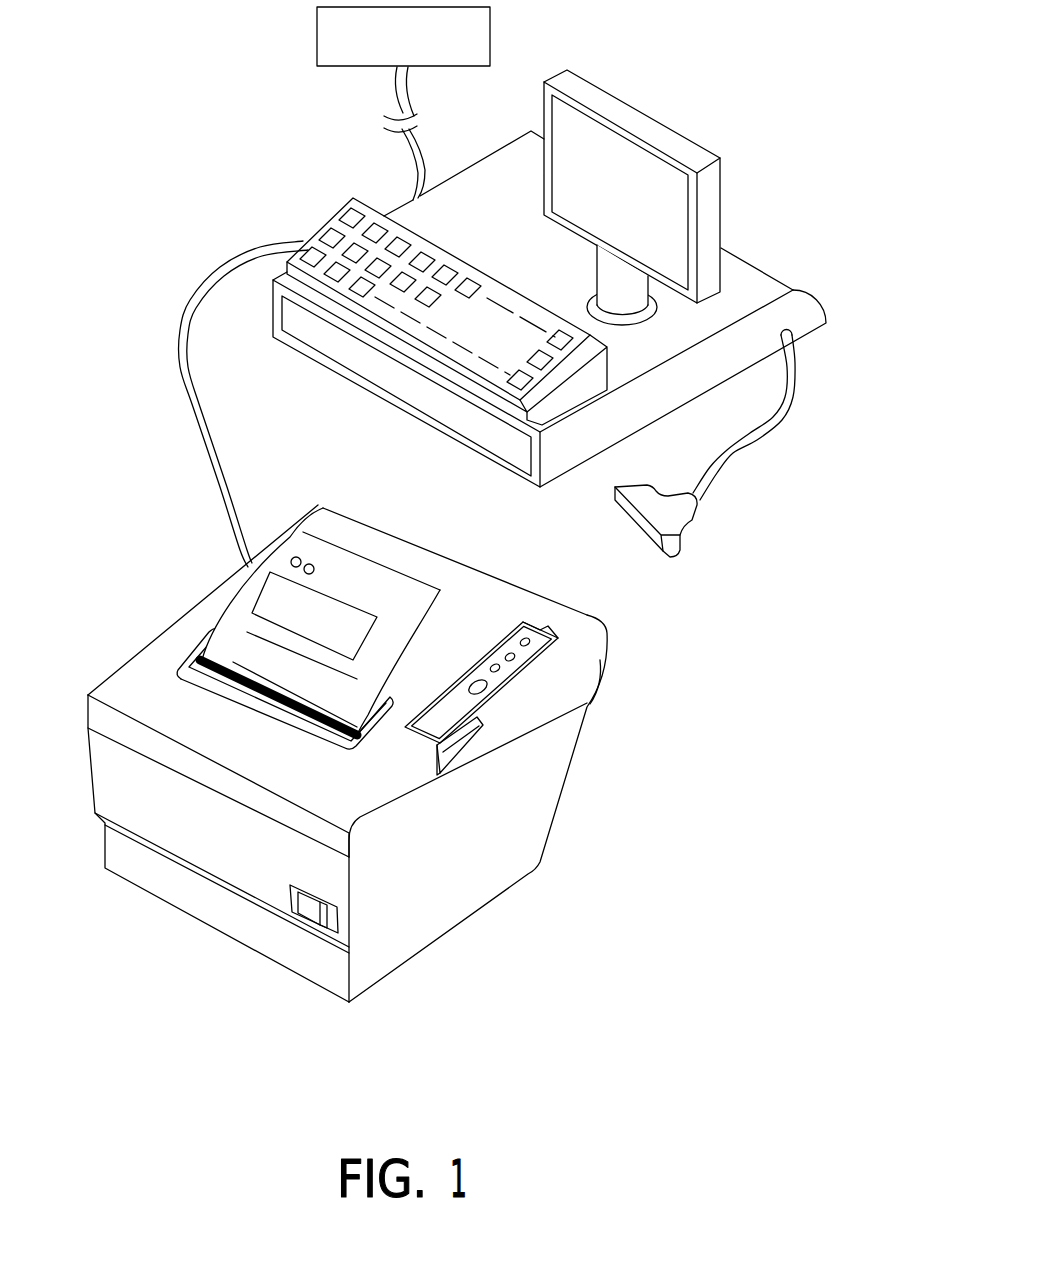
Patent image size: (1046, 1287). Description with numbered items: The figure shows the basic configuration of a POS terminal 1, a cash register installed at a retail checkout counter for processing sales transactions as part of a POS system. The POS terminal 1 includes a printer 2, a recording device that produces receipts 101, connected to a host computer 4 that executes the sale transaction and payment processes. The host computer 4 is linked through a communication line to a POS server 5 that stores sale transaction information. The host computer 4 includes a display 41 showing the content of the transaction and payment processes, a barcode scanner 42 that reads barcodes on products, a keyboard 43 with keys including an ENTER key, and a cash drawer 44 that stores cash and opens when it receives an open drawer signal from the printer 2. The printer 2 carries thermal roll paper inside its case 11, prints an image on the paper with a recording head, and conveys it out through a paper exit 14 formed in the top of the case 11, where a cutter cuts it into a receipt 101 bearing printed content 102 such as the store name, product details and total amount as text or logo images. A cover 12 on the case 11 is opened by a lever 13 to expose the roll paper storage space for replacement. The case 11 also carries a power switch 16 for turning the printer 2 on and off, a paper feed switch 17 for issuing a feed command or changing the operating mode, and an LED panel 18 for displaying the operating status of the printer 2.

The POS terminal 1 is at (672, 88).
The printer 2 is at (387, 758).
The host computer 4 is at (757, 278).
The POS server 5 is at (492, 36).
The case 11 is at (587, 683).
The cover 12 is at (500, 593).
The lever 13 is at (442, 720).
The paper exit 14 is at (205, 620).
The power switch 16 is at (313, 902).
The paper feed switch 17 is at (483, 693).
The LED panel 18 is at (540, 628).
The display 41 is at (700, 140).
The barcode scanner 42 is at (685, 513).
The keyboard 43 is at (415, 332).
The cash drawer 44 is at (433, 398).
The receipt 101 is at (336, 614).
The printed image area 102 is at (353, 633).